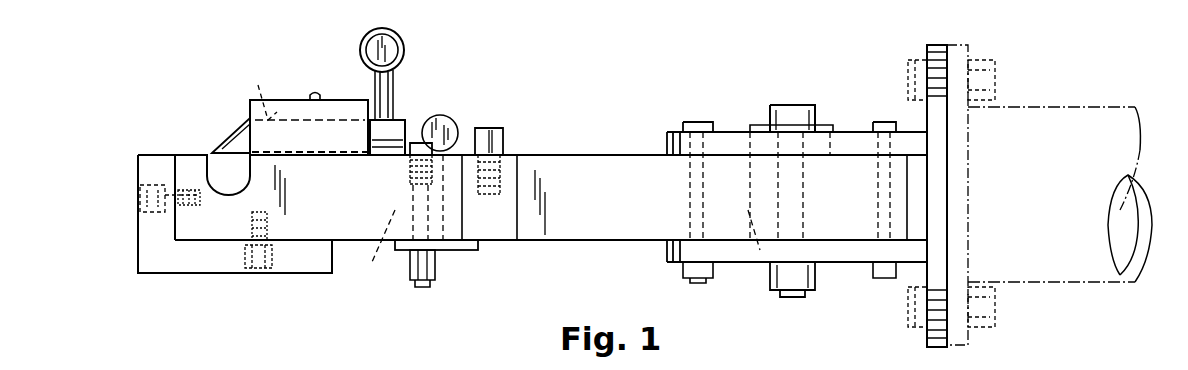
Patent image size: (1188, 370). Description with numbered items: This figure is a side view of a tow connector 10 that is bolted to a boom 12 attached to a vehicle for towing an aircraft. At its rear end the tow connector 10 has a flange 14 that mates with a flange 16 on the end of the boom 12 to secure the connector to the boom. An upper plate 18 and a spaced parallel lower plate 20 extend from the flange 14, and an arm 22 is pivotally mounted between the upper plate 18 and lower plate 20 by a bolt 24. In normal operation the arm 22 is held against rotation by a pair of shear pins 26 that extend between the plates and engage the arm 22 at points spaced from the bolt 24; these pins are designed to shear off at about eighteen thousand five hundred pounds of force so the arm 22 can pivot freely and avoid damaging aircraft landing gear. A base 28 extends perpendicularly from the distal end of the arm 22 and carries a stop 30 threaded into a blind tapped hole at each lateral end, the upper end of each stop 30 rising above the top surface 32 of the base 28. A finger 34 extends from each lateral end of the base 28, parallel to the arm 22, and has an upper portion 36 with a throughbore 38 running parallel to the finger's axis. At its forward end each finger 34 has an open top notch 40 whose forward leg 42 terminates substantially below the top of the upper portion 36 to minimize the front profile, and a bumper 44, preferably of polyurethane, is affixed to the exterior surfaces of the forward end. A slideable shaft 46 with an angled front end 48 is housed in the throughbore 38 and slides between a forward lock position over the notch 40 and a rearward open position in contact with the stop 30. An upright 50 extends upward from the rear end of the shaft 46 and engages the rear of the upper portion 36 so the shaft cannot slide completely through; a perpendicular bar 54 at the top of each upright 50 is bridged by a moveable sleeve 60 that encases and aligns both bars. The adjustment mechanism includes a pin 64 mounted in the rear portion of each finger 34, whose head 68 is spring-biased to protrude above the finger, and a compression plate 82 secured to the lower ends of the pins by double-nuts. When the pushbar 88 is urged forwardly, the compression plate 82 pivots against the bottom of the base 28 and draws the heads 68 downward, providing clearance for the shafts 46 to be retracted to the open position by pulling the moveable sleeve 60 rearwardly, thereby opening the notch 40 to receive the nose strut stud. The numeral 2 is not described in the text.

The pipe support apparatus 2 is at (744, 217).
The tow connector 10 is at (217, 97).
The boom 12 is at (1055, 105).
The flange 14 is at (925, 55).
The flange 16 is at (968, 52).
The upper plate 18 is at (728, 130).
The lower plate 20 is at (735, 264).
The arm 22 is at (625, 208).
The bolt 24 is at (790, 103).
The shear pins 26 is at (697, 120).
The base 28 is at (500, 228).
The stop 30 is at (490, 127).
The top surface 32 is at (512, 155).
The finger 34 is at (352, 226).
The upper portion 36 is at (287, 108).
The throughbore 38 is at (255, 90).
The notch 40 is at (237, 193).
The forward leg 42 is at (183, 155).
The bumper 44 is at (165, 270).
The shaft 46 is at (388, 136).
The angled front end 48 is at (225, 138).
The upright 50 is at (378, 84).
The bar 54 is at (396, 50).
The moveable sleeve 60 is at (400, 36).
The pin 64 is at (373, 247).
The head 68 is at (420, 140).
The compression plate 82 is at (462, 250).
The pushbar 88 is at (447, 125).